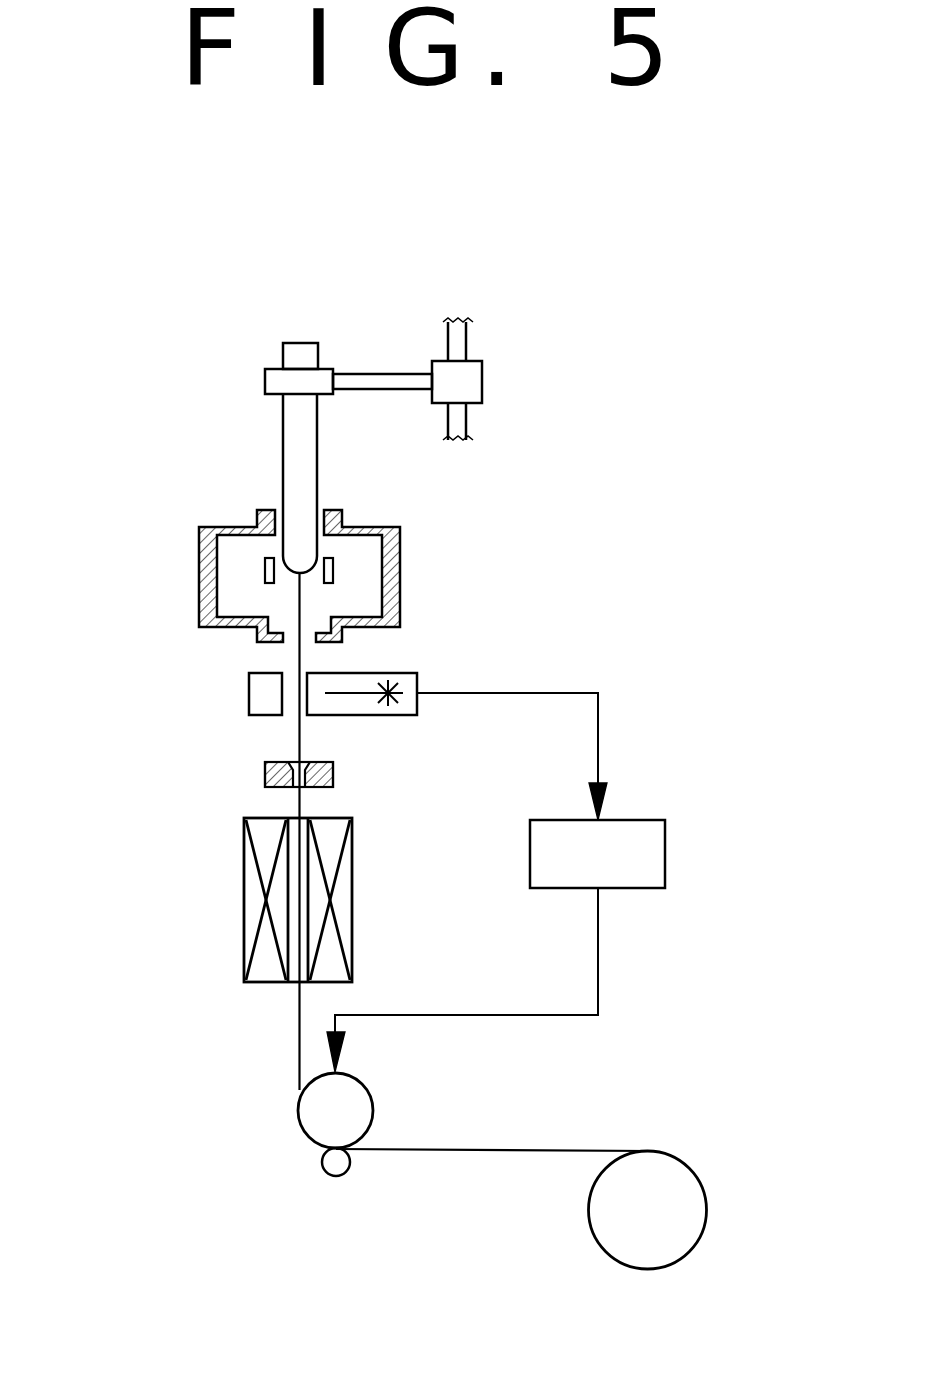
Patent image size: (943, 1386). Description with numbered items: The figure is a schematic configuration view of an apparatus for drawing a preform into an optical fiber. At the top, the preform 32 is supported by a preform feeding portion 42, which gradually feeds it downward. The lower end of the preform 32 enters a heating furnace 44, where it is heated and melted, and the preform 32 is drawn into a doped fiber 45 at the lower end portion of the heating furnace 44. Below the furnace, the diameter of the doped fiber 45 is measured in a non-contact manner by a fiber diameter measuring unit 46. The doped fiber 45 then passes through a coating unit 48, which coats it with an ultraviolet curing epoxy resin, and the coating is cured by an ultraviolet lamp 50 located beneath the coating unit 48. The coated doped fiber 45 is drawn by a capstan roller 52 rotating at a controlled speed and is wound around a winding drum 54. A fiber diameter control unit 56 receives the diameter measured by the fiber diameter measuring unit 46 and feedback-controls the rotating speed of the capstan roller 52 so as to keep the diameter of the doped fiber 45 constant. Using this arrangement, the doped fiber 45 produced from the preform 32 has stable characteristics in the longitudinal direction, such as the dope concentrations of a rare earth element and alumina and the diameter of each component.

The preform 32 is at (283, 448).
The preform feeding portion 42 is at (515, 372).
The heating furnace 44 is at (158, 560).
The doped fiber 45 is at (299, 740).
The fiber diameter measuring unit 46 is at (400, 672).
The coating unit 48 is at (333, 770).
The ultraviolet lamp 50 is at (244, 893).
The capstan roller 52 is at (368, 1107).
The winding drum 54 is at (693, 1183).
The fiber diameter control unit 56 is at (637, 820).